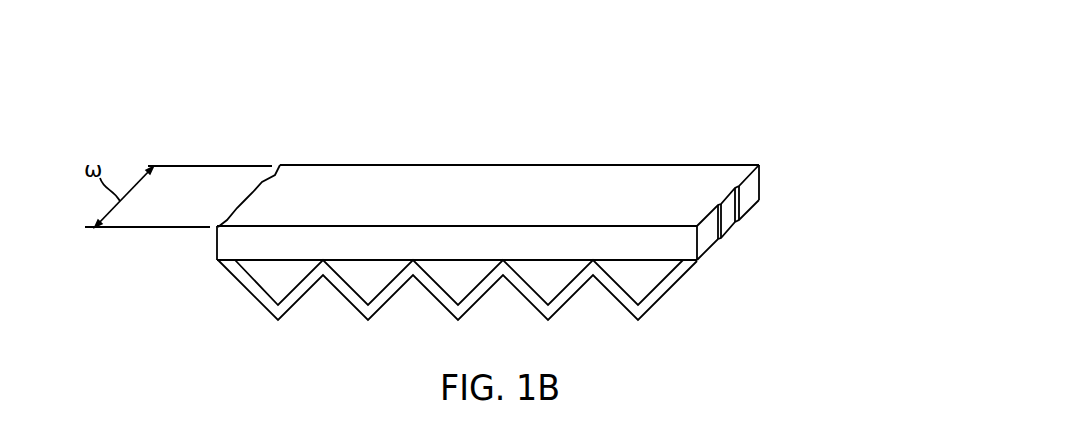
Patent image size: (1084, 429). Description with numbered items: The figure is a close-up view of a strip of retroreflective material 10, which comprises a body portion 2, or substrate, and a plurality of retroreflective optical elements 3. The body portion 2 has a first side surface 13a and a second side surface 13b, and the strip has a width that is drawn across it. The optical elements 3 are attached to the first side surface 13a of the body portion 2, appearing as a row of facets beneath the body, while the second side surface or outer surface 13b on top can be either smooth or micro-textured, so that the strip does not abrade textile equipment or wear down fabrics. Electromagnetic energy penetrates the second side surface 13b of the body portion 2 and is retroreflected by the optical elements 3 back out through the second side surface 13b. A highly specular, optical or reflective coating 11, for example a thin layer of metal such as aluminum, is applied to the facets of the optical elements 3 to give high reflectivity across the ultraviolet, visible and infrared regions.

The strip of retroreflective material 10 is at (696, 97).
The body portion 2 is at (572, 176).
The second side surface 13b is at (348, 182).
The first side surface 13a is at (262, 262).
The retroreflective optical elements 3 is at (655, 268).
The reflective coating 11 is at (655, 301).